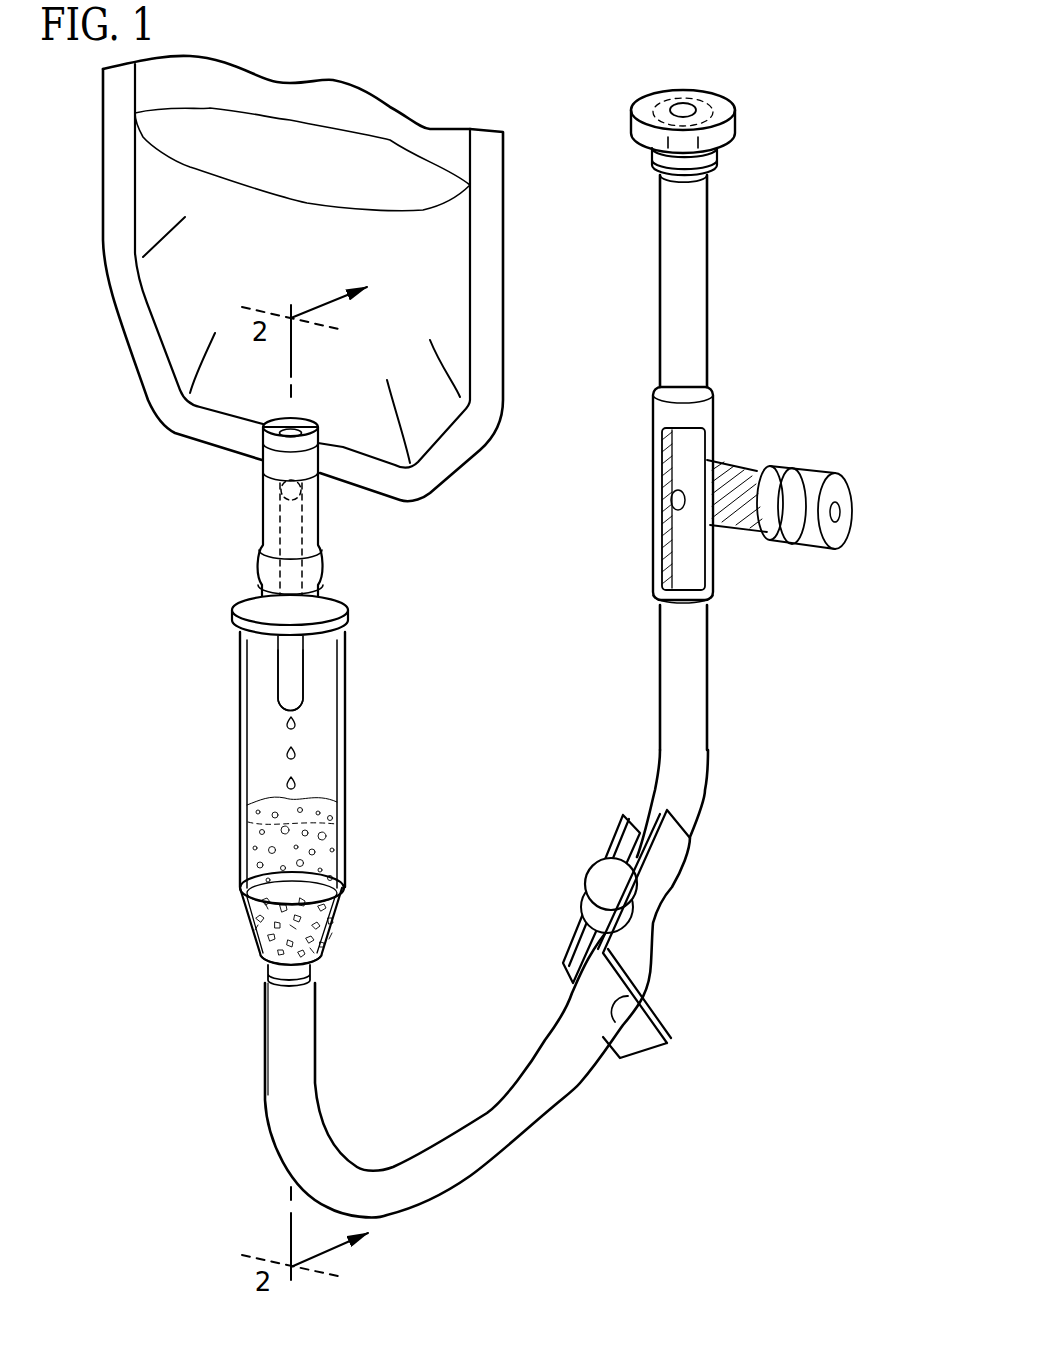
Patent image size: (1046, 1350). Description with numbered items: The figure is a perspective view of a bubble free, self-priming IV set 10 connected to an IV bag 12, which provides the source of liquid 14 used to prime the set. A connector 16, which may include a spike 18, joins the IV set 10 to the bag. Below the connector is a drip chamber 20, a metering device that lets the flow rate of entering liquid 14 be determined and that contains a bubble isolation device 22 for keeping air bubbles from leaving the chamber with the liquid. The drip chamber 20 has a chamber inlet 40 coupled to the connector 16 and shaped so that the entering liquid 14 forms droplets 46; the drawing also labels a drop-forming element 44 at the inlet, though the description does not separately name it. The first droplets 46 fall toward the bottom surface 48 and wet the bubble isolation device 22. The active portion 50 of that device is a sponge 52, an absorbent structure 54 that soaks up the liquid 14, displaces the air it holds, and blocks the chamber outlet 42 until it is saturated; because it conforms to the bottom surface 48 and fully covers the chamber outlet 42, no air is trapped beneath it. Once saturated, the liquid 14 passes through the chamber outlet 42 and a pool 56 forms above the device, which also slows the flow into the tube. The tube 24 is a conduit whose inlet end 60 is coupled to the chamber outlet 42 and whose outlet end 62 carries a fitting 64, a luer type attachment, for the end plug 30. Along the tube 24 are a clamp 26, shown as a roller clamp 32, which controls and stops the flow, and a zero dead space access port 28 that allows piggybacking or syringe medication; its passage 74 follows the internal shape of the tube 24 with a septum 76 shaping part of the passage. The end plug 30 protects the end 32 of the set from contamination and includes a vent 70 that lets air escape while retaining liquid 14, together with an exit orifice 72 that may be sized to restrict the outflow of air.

The IV set 10 is at (718, 1177).
The IV bag 12 is at (103, 178).
The liquid 14 is at (377, 143).
The connector 16 is at (289, 526).
The spike 18 is at (307, 507).
The drip chamber 20 is at (264, 759).
The bubble isolation device 22 is at (266, 928).
The tube 24 is at (715, 738).
The clamp 26 is at (678, 928).
The zero dead space access port 28 is at (729, 527).
The end plug 30 is at (653, 128).
The roller clamp 32 is at (600, 880).
The chamber inlet 40 is at (307, 648).
The chamber outlet 42 is at (459, 983).
The drop former 44 is at (285, 710).
The droplets 46 is at (293, 728).
The bottom surface 48 is at (265, 963).
The active portion 50 is at (287, 937).
The sponge 52 is at (317, 928).
The absorbent structure 54 is at (297, 883).
The pool 56 is at (310, 808).
The inlet end 60 is at (280, 978).
The outlet end 62 is at (708, 173).
The fitting 64 is at (648, 167).
The vent 70 is at (717, 105).
The exit orifice 72 is at (682, 110).
The passage 74 is at (677, 510).
The septum 76 is at (723, 523).